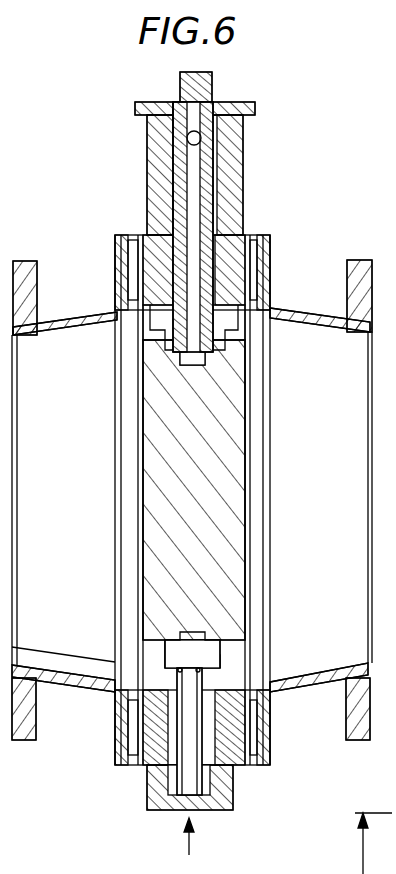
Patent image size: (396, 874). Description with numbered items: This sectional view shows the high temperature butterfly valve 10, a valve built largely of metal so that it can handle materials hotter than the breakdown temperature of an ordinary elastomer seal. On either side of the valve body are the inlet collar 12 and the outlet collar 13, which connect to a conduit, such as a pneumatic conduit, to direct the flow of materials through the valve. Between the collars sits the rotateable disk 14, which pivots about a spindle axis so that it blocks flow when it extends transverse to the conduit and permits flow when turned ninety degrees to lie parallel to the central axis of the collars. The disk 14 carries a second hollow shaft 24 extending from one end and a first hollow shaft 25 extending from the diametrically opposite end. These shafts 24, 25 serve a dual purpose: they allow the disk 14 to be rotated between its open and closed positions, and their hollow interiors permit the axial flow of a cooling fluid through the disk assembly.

The high temperature butterfly valve 10 is at (308, 182).
The inlet collar 12 is at (23, 262).
The outlet collar 13 is at (358, 267).
The rotateable disk 14 is at (245, 435).
The second hollow shaft 24 is at (242, 183).
The first hollow shaft 25 is at (178, 768).